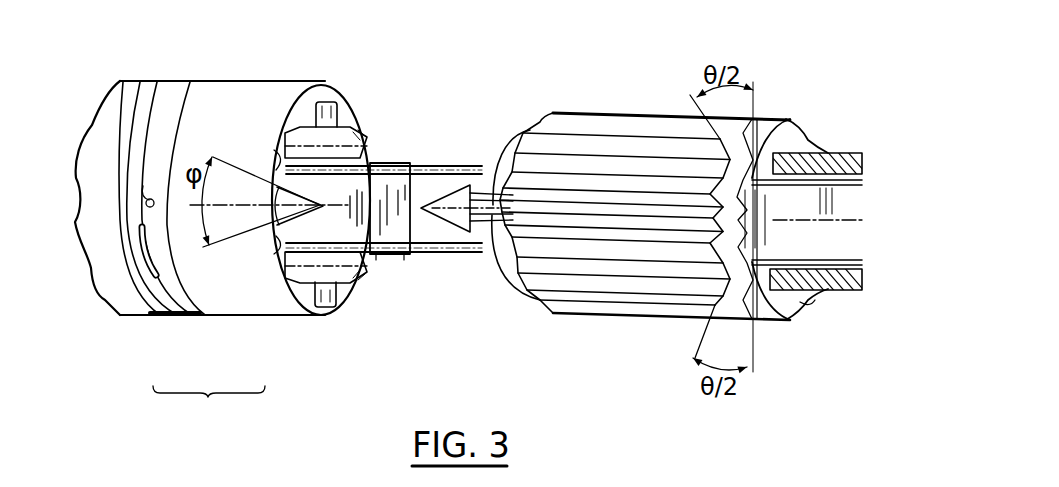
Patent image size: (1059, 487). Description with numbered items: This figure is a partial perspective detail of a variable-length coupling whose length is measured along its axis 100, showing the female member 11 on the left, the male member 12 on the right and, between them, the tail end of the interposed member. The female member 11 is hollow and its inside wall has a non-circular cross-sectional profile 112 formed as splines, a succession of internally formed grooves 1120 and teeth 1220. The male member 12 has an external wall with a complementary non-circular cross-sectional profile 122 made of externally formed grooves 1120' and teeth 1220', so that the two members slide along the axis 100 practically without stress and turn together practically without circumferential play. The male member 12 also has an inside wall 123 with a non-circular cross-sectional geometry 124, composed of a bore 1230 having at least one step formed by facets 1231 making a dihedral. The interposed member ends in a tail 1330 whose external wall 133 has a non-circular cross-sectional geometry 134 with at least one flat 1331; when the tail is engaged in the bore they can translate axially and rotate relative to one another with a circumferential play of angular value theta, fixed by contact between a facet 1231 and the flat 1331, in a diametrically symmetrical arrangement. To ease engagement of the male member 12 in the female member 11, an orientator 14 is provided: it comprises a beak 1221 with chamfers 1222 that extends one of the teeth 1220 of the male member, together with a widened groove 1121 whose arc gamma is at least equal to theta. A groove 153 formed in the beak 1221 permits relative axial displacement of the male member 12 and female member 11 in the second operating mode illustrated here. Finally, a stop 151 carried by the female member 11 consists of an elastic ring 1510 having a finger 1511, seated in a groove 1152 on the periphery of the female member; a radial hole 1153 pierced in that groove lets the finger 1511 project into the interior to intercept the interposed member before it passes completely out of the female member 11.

The female member 11 is at (240, 97).
The non-circular cross-sectional profile 112 is at (308, 116).
The internally formed grooves 1120 is at (349, 168).
The teeth 1220 is at (370, 156).
The widened groove 1121 is at (271, 290).
The external wall 133 is at (440, 163).
The tail 1330 is at (413, 162).
The non-circular cross-sectional geometry 134 is at (388, 258).
The chamfers 1222 is at (420, 254).
The beak 1221 is at (460, 256).
The orientator 14 is at (469, 183).
The groove 153 is at (503, 280).
The male member 12 is at (648, 108).
The externally formed grooves 1120' is at (622, 96).
The teeth 1220' is at (559, 201).
The facets 1231 is at (725, 230).
The bore 1230 is at (768, 322).
The non-circular cross-sectional geometry 124 is at (782, 120).
The non-circular cross-sectional profile 122 is at (788, 135).
The inside wall 123 is at (823, 158).
The axis 100 is at (808, 220).
The flat 1331 is at (797, 308).
The radial hole 1153 is at (148, 207).
The groove 1152 is at (158, 316).
The elastic ring 1510 is at (190, 317).
The stop 151 is at (209, 407).
The finger 1511 is at (168, 245).